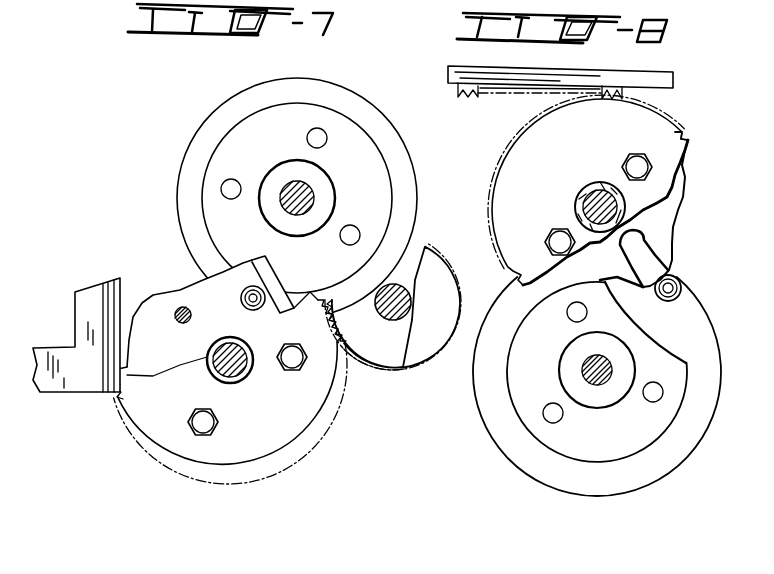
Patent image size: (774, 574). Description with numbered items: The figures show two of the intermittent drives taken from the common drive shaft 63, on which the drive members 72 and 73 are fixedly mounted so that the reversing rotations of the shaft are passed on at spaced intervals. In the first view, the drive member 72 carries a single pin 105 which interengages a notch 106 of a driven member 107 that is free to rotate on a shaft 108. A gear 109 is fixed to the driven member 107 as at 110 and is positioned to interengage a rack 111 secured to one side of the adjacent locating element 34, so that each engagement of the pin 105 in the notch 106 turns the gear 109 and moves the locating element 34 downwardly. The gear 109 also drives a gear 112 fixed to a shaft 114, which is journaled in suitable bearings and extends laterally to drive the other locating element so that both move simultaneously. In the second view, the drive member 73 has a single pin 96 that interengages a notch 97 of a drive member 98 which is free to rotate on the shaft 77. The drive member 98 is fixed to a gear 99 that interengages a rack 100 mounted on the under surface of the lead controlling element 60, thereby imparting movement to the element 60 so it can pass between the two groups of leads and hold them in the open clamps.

In FIG. 7, the locating element 34 is at (82, 307).
In FIG. 8, the lead controlling element 60 is at (600, 78).
In FIG. 7, the drive shaft 63 is at (310, 194).
In FIG. 8, the drive shaft 63 is at (585, 364).
In FIG. 7, the drive member 72 is at (332, 110).
In FIG. 8, the drive member 73 is at (490, 427).
In FIG. 8, the shaft 77 is at (596, 190).
In FIG. 8, the pin 96 is at (682, 287).
In FIG. 8, the notch 97 is at (650, 254).
In FIG. 8, the drive member 98 is at (681, 183).
In FIG. 8, the gear 99 is at (688, 139).
In FIG. 8, the rack 100 is at (458, 90).
In FIG. 7, the pin 105 is at (251, 306).
In FIG. 7, the notch 106 is at (278, 275).
In FIG. 7, the driven member 107 is at (165, 310).
In FIG. 7, the shaft 108 is at (238, 374).
In FIG. 7, the gear 109 is at (160, 433).
In FIG. 7, the fixing point 110 is at (300, 365).
In FIG. 7, the rack 111 is at (113, 394).
In FIG. 7, the gear 112 is at (380, 356).
In FIG. 7, the shaft 114 is at (411, 302).